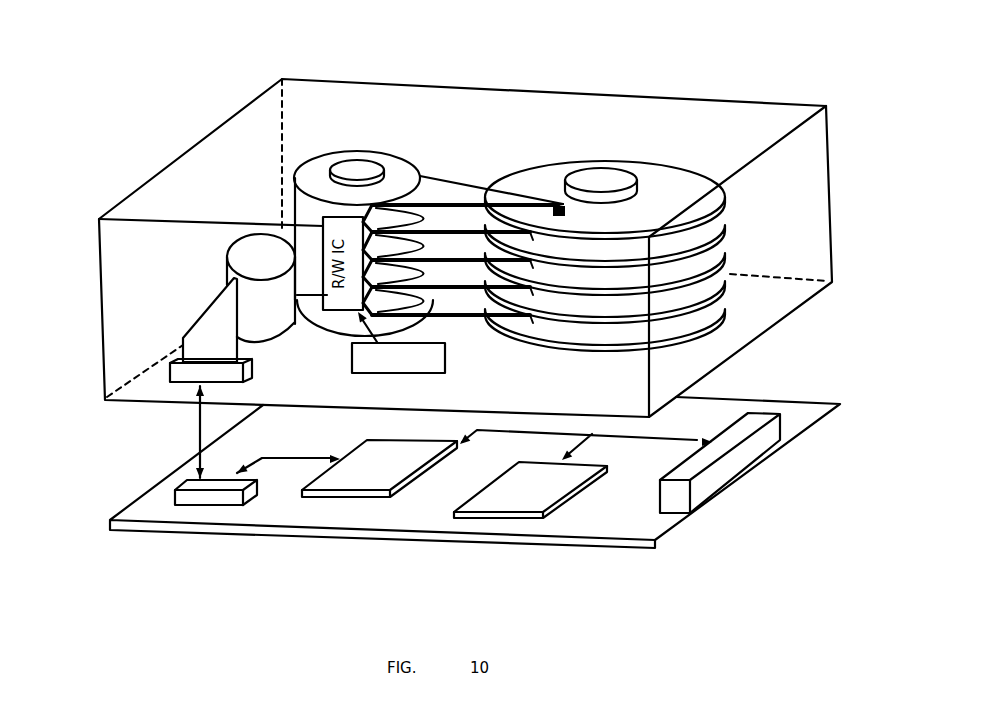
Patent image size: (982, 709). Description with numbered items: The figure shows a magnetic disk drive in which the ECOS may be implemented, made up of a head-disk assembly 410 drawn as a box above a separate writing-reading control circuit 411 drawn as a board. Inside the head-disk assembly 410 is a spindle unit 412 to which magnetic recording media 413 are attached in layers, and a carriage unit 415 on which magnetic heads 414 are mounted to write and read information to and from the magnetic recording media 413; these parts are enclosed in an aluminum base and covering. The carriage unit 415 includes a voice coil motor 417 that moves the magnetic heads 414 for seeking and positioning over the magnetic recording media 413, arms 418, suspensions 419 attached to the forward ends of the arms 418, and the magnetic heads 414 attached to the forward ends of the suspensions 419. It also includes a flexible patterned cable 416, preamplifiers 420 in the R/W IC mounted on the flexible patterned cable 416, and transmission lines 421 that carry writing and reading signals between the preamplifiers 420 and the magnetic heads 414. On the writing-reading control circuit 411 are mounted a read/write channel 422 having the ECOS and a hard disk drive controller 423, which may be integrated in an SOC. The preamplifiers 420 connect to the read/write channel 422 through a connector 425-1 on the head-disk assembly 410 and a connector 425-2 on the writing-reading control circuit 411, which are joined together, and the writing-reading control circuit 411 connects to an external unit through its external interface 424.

The head-disk assembly 410 is at (312, 78).
The writing-reading control circuit 411 is at (635, 547).
The spindle unit 412 is at (622, 178).
The magnetic recording media 413 is at (673, 182).
The magnetic heads 414 is at (563, 203).
The carriage unit 415 is at (328, 155).
The flexible patterned cable 416 is at (267, 327).
The voice coil motor 417 is at (312, 173).
The arms 418 is at (445, 185).
The suspensions 419 is at (553, 205).
The preamplifiers 420 is at (352, 376).
The transmission lines 421 is at (437, 313).
The read/write channel 422 is at (337, 493).
The hard disk drive controller 423 is at (527, 517).
The external interface 424 is at (727, 472).
The connector 425-1 is at (168, 372).
The connector 425-2 is at (175, 494).